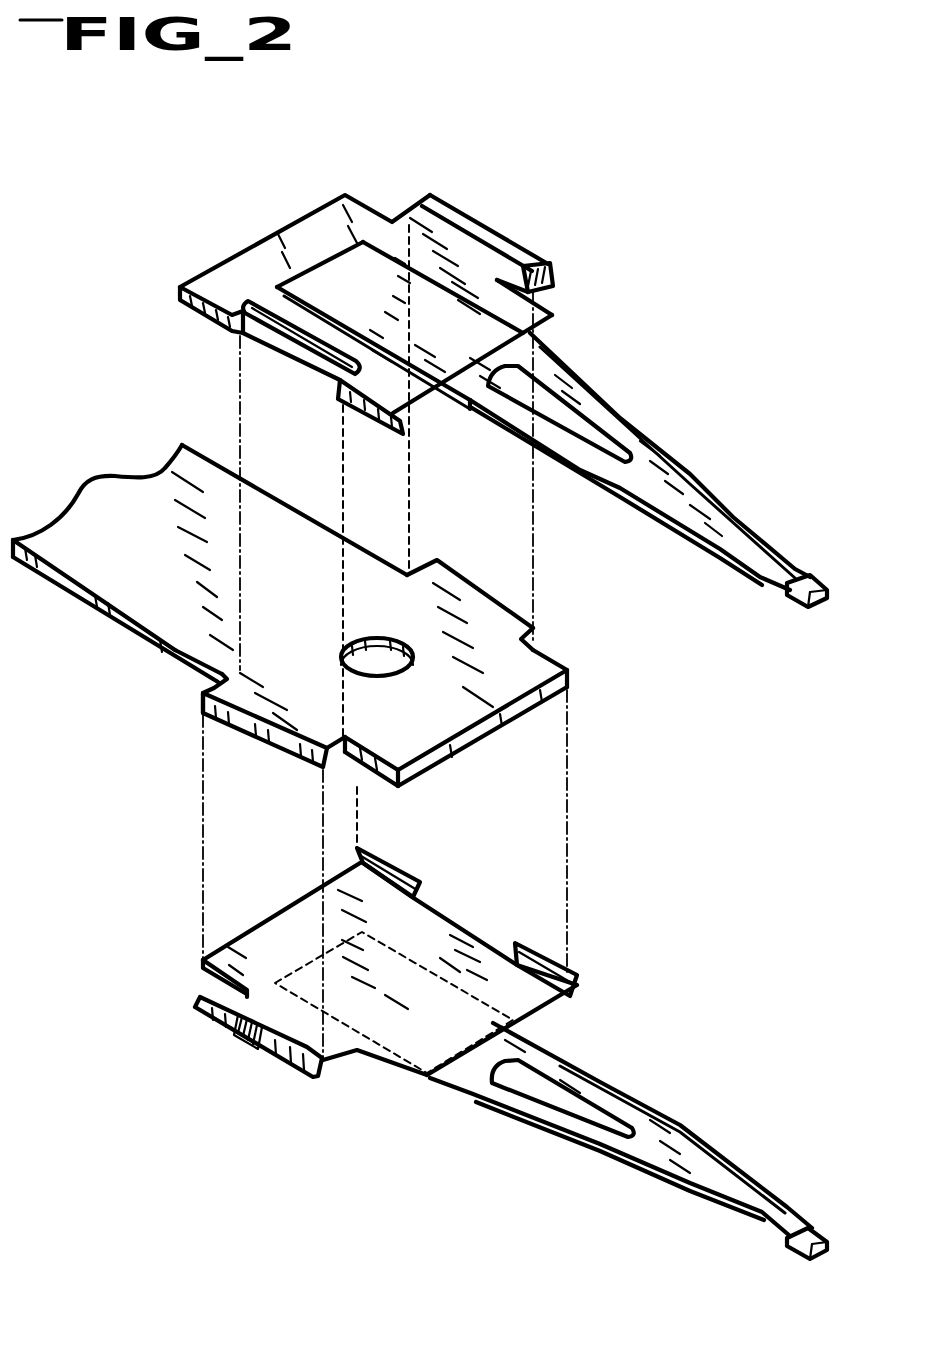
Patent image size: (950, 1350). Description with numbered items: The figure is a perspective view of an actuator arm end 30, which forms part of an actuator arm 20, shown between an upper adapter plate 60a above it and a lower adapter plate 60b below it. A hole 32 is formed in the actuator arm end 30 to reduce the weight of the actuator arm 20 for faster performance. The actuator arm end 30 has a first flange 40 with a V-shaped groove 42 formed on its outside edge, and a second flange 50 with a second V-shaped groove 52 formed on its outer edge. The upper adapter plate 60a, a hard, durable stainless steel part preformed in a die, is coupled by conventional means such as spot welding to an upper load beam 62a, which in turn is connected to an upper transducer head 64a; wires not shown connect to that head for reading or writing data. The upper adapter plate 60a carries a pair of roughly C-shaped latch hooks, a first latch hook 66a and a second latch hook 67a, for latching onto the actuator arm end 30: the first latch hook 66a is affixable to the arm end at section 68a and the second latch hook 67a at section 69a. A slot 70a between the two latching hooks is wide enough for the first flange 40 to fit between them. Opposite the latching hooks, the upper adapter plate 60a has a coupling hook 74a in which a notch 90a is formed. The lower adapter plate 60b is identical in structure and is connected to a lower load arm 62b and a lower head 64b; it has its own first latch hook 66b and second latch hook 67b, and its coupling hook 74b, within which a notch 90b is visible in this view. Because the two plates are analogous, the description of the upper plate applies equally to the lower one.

The actuator arm 20 is at (120, 508).
The actuator arm end 30 is at (277, 520).
The hole 32 is at (380, 648).
The first flange 40 is at (205, 686).
The V-shaped groove 42 is at (290, 742).
The second flange 50 is at (477, 590).
The second V-shaped groove 52 is at (535, 638).
The upper adapter plate 60a is at (300, 230).
The lower adapter plate 60b is at (300, 928).
The upper load beam 62a is at (675, 472).
The lower load arm 62b is at (608, 1098).
The upper transducer head 64a is at (812, 590).
The lower head 64b is at (822, 1232).
The first latch hook 66a is at (212, 318).
The first latch hook 66b is at (398, 872).
The second latch hook 67a is at (358, 410).
The second latch hook 67b is at (545, 947).
The section 68a is at (210, 670).
The section 69a is at (350, 760).
The slot 70a is at (322, 328).
The coupling hook 74a is at (510, 258).
The coupling hook 74b is at (285, 1062).
The notch 90a is at (496, 232).
The notch 90b is at (245, 1040).